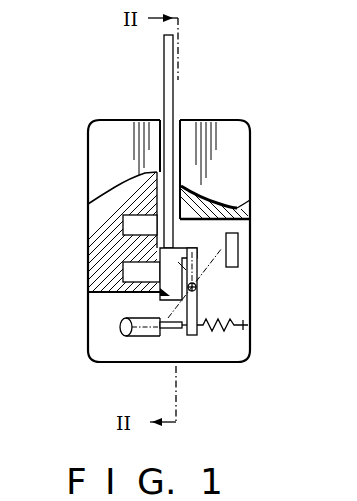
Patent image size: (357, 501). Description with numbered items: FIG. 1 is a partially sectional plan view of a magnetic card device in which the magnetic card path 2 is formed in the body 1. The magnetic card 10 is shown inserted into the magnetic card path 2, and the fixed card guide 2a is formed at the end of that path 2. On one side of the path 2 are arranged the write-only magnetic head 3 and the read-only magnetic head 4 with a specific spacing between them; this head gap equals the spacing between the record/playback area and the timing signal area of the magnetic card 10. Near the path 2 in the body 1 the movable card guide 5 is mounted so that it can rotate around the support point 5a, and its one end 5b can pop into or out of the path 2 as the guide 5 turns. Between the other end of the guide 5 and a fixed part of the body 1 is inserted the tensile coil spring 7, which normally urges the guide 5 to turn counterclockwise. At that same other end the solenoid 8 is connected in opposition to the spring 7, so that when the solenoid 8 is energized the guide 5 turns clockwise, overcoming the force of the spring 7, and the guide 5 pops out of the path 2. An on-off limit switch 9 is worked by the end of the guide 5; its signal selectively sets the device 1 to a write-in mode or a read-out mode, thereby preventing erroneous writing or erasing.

The body 1 is at (237, 120).
The magnetic card path 2 is at (192, 182).
The fixed card guide 2a is at (165, 293).
The write-only magnetic head 3 is at (128, 276).
The read-only magnetic head 4 is at (128, 225).
The movable card guide 5 is at (198, 307).
The support point 5a is at (205, 268).
The one end of the movable card guide 5b is at (182, 213).
The tensile coil spring 7 is at (215, 333).
The solenoid 8 is at (140, 337).
The on-off limit switch 9 is at (238, 255).
The magnetic card 10 is at (170, 68).